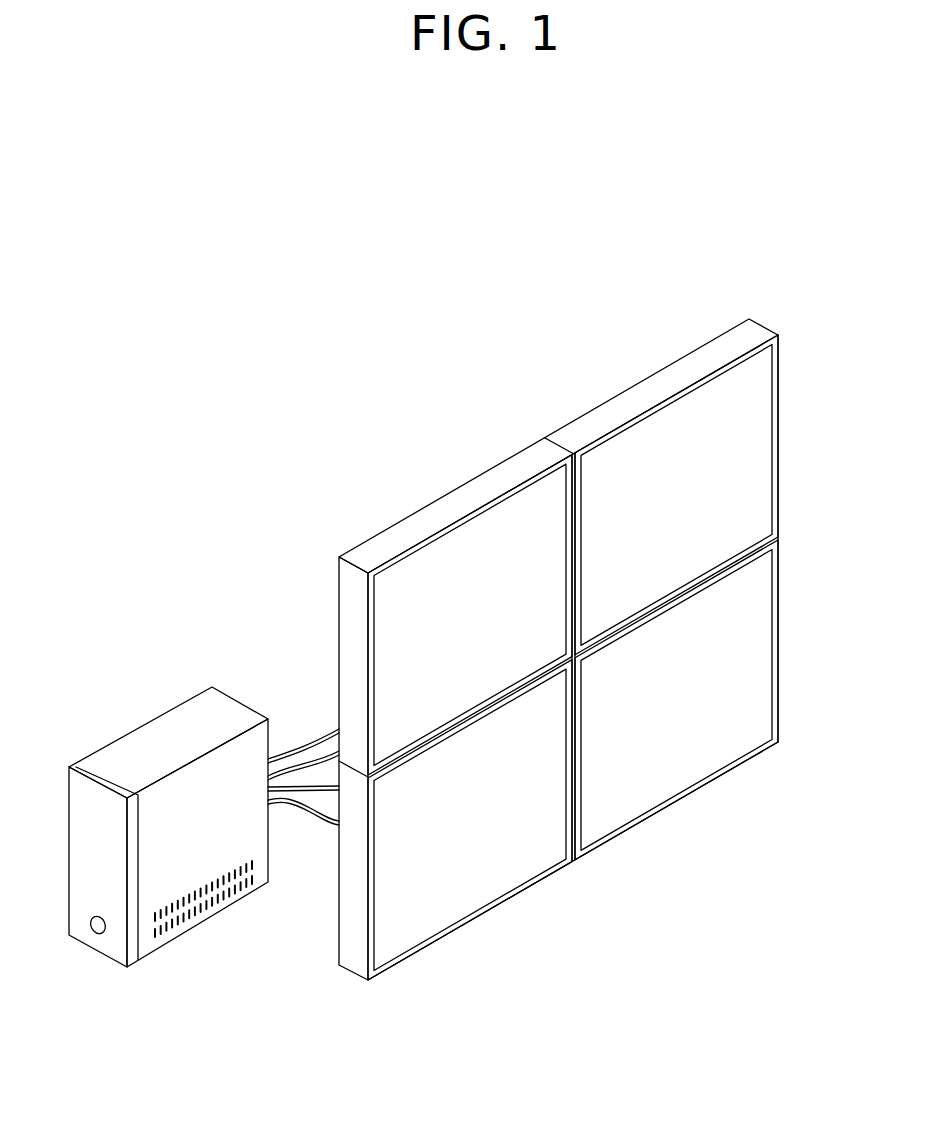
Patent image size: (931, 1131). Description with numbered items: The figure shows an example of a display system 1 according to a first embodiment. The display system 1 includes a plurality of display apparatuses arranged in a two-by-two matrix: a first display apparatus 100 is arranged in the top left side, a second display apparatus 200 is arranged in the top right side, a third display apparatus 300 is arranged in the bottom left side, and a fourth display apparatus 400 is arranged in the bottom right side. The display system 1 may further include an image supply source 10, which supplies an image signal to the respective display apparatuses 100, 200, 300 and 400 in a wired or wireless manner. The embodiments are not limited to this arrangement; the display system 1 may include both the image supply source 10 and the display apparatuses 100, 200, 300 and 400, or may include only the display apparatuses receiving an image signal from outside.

The display system 1 is at (262, 398).
The image supply source 10 is at (153, 727).
The first display apparatus 100 is at (438, 505).
The second display apparatus 200 is at (668, 370).
The third display apparatus 300 is at (495, 903).
The fourth display apparatus 400 is at (705, 782).